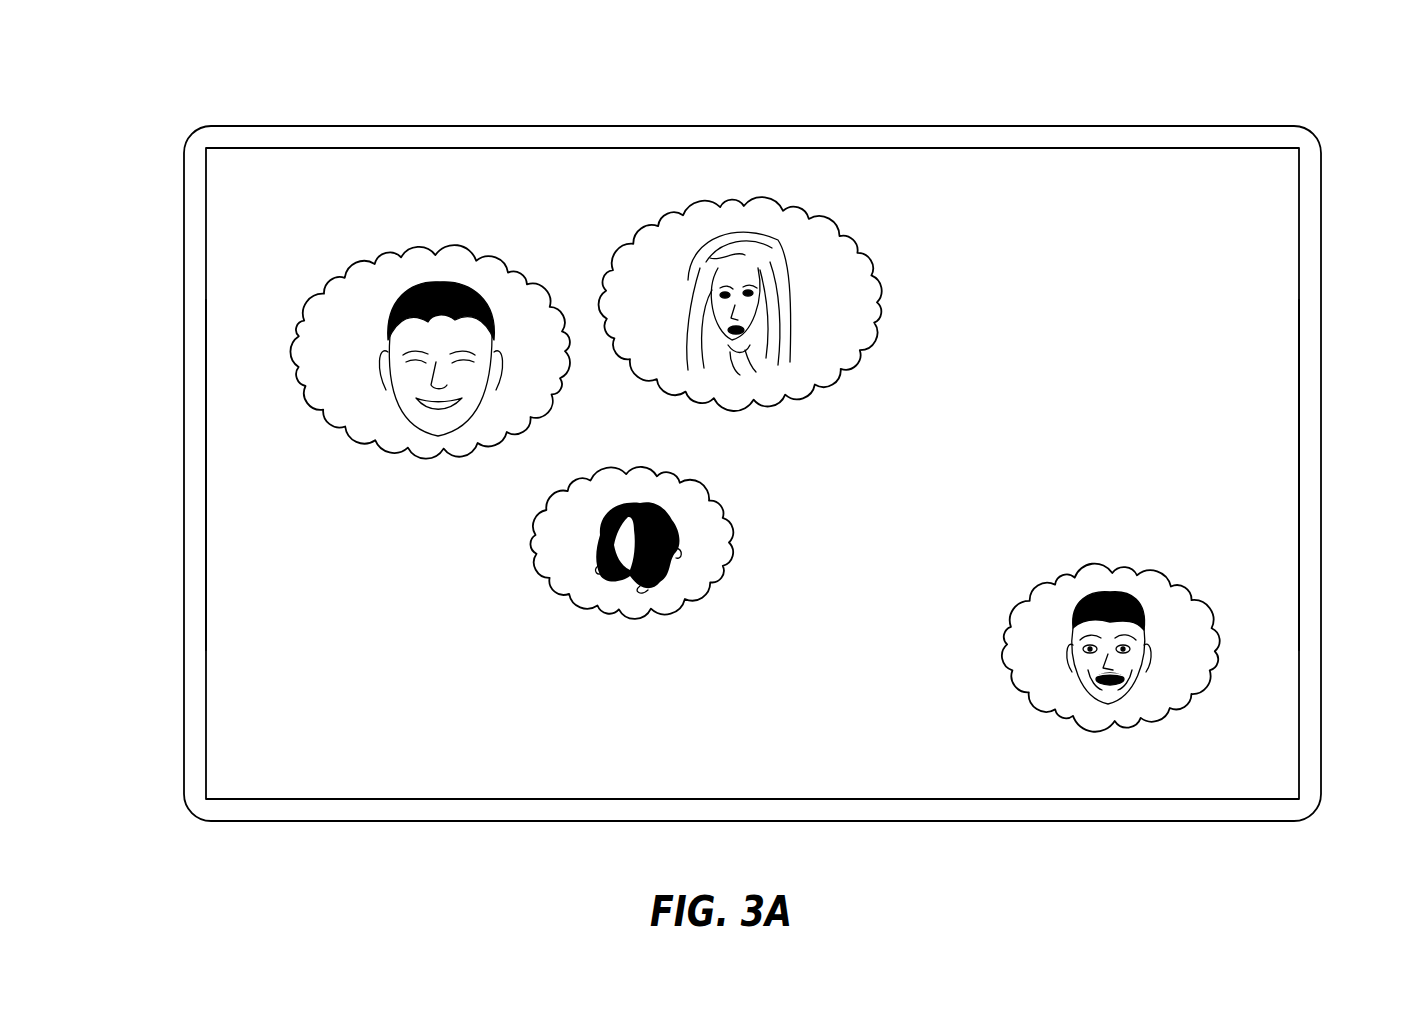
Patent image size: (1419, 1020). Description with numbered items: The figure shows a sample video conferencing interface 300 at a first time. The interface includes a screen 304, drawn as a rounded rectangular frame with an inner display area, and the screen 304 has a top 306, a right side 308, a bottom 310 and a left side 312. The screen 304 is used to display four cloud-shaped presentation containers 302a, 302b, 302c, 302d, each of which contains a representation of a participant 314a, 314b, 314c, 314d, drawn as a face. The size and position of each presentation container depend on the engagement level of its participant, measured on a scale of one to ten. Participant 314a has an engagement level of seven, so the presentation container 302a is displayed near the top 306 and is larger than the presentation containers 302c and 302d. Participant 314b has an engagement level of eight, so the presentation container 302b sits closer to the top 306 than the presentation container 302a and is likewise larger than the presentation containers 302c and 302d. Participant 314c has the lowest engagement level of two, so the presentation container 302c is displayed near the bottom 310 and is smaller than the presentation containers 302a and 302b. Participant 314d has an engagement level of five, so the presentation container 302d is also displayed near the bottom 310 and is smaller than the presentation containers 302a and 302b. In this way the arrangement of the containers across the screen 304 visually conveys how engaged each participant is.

The video conferencing interface 300 is at (743, 455).
The presentation container 302a is at (429, 389).
The presentation container 302b is at (794, 322).
The presentation container 302c is at (1123, 642).
The presentation container 302d is at (631, 576).
The screen 304 is at (1009, 186).
The top 306 is at (724, 146).
The right side 308 is at (1300, 470).
The bottom 310 is at (378, 800).
The left side 312 is at (206, 462).
The participant 314a is at (448, 420).
The participant 314b is at (715, 362).
The participant 314c is at (1090, 690).
The participant 314d is at (600, 570).